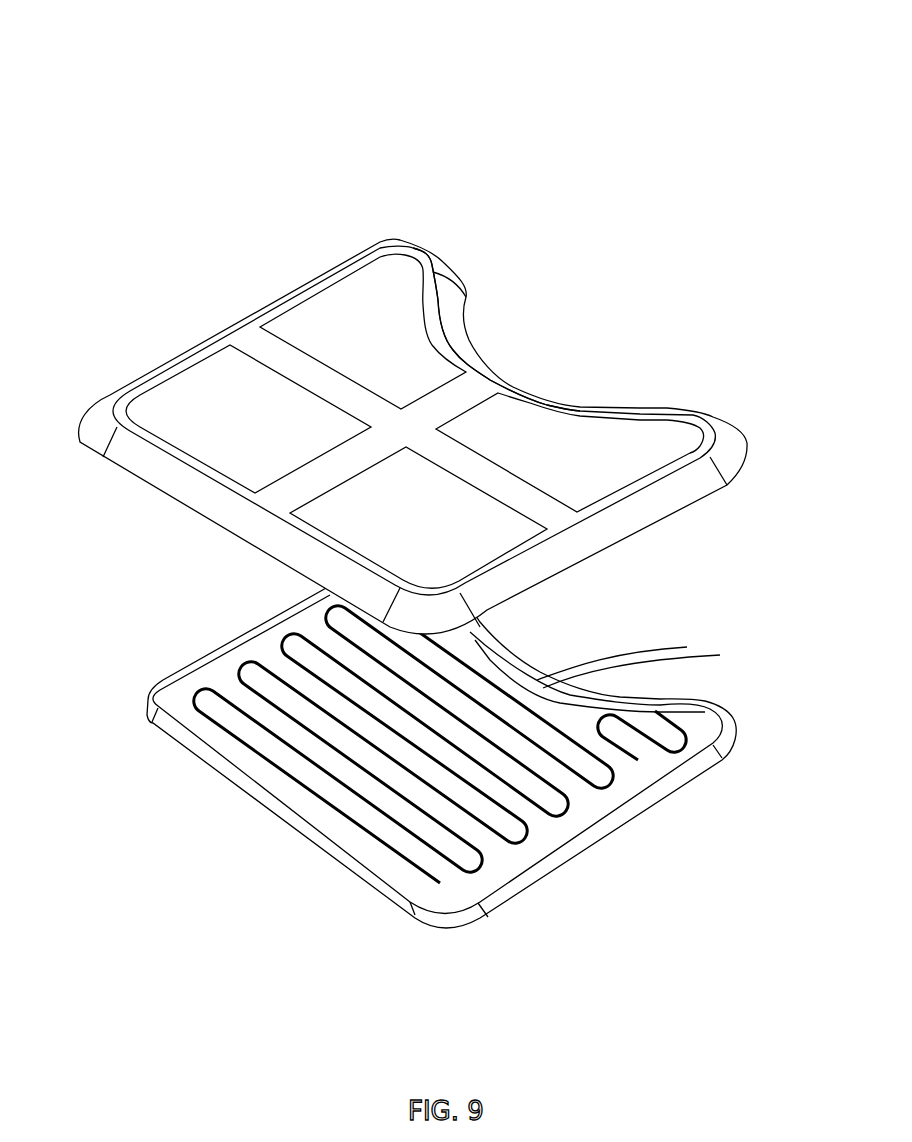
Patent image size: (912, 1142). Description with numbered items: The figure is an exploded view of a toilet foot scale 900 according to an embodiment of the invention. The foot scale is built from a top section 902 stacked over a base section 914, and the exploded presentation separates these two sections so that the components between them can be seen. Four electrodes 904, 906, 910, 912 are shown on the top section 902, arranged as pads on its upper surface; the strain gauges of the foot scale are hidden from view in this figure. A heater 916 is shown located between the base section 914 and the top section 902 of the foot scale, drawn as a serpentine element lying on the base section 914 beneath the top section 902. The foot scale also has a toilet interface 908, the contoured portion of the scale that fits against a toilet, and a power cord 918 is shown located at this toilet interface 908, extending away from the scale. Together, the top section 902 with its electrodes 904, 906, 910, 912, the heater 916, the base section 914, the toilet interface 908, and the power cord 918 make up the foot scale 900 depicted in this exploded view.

The foot scale 900 is at (155, 95).
The top section 902 is at (82, 430).
The electrode 904 is at (203, 393).
The electrode 906 is at (350, 310).
The toilet interface 908 is at (505, 378).
The electrode 910 is at (623, 463).
The electrode 912 is at (450, 548).
The base section 914 is at (145, 700).
The heater 916 is at (220, 733).
The power cord 918 is at (633, 659).